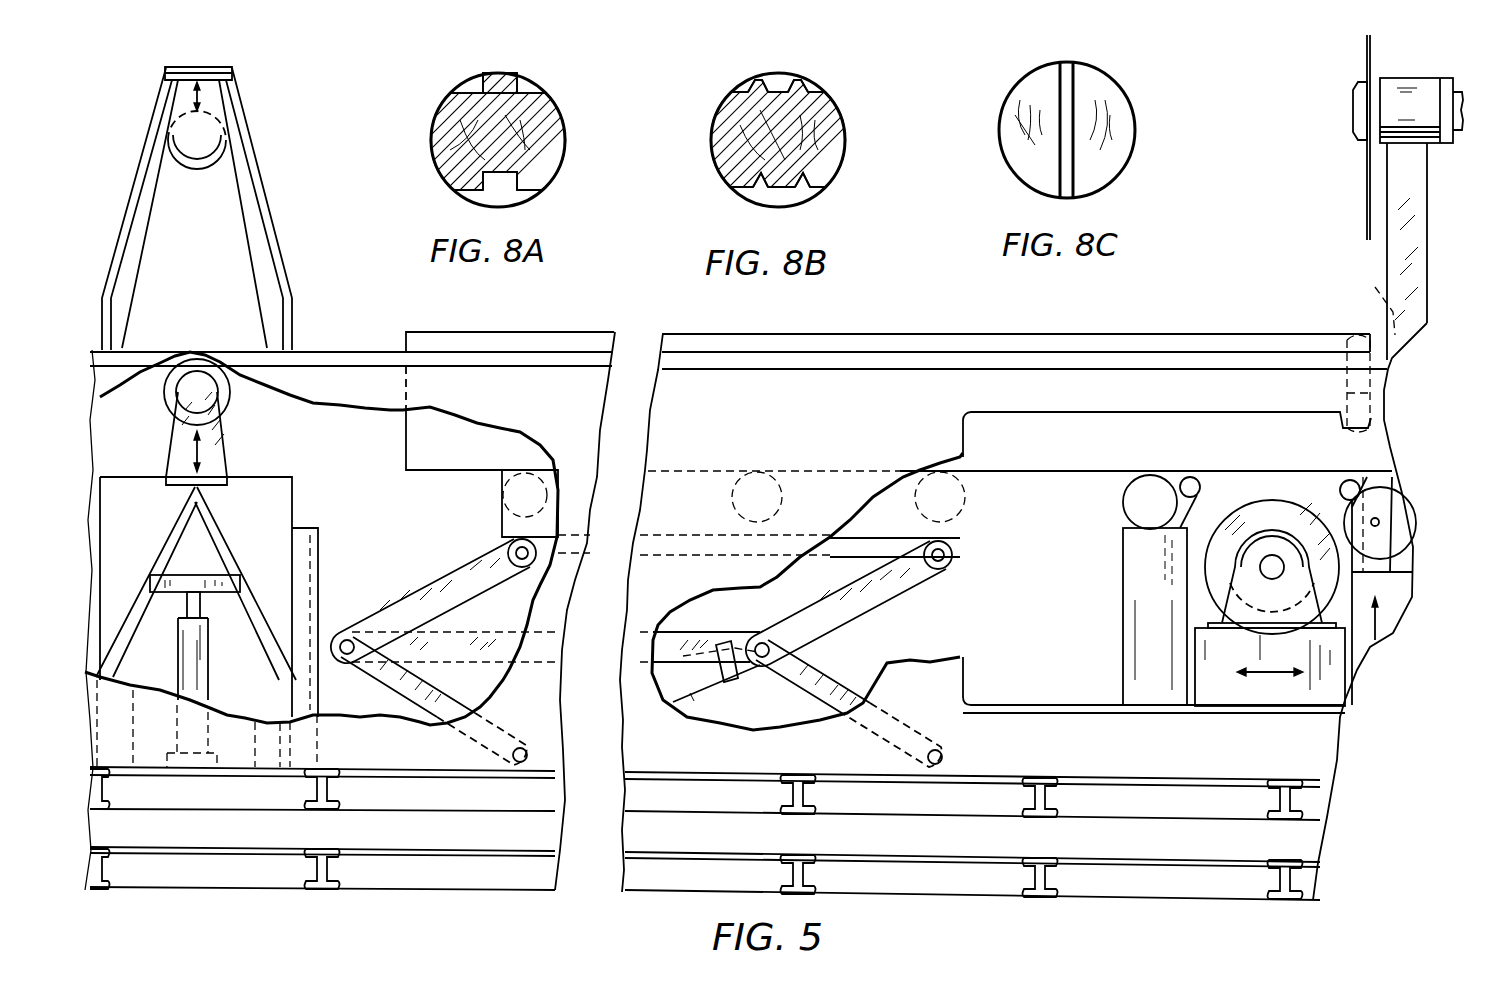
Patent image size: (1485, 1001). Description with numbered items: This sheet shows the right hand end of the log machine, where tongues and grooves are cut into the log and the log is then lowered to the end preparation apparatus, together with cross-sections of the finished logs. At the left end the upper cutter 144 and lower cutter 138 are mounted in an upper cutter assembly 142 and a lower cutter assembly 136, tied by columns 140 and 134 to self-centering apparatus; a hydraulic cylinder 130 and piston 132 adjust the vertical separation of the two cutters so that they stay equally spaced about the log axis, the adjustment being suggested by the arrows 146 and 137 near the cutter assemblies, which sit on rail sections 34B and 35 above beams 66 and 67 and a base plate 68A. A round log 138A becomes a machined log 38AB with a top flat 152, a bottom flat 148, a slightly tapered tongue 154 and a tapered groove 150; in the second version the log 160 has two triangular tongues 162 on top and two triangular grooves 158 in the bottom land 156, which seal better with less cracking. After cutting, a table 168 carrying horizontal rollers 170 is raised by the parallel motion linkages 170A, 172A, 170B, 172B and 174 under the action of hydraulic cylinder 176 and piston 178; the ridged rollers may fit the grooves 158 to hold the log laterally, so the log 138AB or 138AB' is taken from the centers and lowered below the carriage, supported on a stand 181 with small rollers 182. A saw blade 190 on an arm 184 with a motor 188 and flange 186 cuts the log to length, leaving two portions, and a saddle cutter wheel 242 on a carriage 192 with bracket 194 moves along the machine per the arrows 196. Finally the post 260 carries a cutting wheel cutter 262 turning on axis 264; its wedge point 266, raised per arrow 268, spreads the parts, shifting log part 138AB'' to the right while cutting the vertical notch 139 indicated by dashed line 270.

In FIG. 5, the rail section 34B is at (348, 343).
In FIG. 5, the rail section 35 is at (777, 421).
In FIG. 5, the log 38AB is at (585, 330).
In FIG. 5, the beam 66 is at (452, 848).
In FIG. 5, the beam 67 is at (982, 851).
In FIG. 5, the base plate 68A is at (667, 773).
In FIG. 5, the hydraulic cylinder 130 is at (198, 647).
In FIG. 5, the piston 132 is at (202, 607).
In FIG. 5, the column 134 is at (222, 538).
In FIG. 5, the lower cutter assembly 136 is at (228, 438).
In FIG. 5, the vertical motion arrow 137 is at (193, 447).
In FIG. 5, the lower cutter 138 is at (162, 397).
In FIG. 8C, the round log 138A is at (1002, 103).
In FIG. 8A, the machined log 138AB is at (544, 140).
In FIG. 5, the machined log 138AB' is at (1024, 344).
In FIG. 8B, the machined log 138AB' is at (824, 140).
In FIG. 5, the log part 138AB'' is at (1349, 305).
In FIG. 8C, the vertical notch 139 is at (1070, 108).
In FIG. 5, the column 140 is at (260, 195).
In FIG. 5, the upper cutter assembly 142 is at (227, 100).
In FIG. 5, the upper cutter 144 is at (197, 170).
In FIG. 5, the vertical motion arrow 146 is at (192, 91).
In FIG. 8A, the bottom flat 148 is at (543, 205).
In FIG. 8A, the groove 150 is at (425, 148).
In FIG. 8A, the top flat 152 is at (503, 122).
In FIG. 8A, the tongue 154 is at (483, 72).
In FIG. 8B, the bottom land 156 is at (783, 190).
In FIG. 8B, the grooves 158 is at (847, 157).
In FIG. 8B, the roller body 160 is at (818, 80).
In FIG. 8B, the top notch 162 is at (803, 53).
In FIG. 5, the table 168 is at (502, 540).
In FIG. 5, the horizontal rollers 170 is at (537, 477).
In FIG. 5, the linkage 170A is at (455, 570).
In FIG. 5, the linkage 170B is at (800, 612).
In FIG. 5, the linkage 172A is at (450, 707).
In FIG. 5, the linkage 172B is at (833, 667).
In FIG. 5, the linkage 174 is at (465, 630).
In FIG. 5, the hydraulic cylinder 176 is at (695, 690).
In FIG. 5, the piston 178 is at (747, 662).
In FIG. 5, the stand 181 is at (1122, 570).
In FIG. 5, the small roller 182 is at (1190, 477).
In FIG. 5, the arm 184 is at (1385, 247).
In FIG. 5, the flange 186 is at (1452, 128).
In FIG. 5, the motor 188 is at (1415, 78).
In FIG. 5, the saw blade 190 is at (1365, 66).
In FIG. 5, the carriage box 192 is at (1327, 675).
In FIG. 5, the wheel bracket 194 is at (1217, 613).
In FIG. 5, the arrows 196 is at (1278, 673).
In FIG. 5, the wheel 242 is at (1280, 487).
In FIG. 5, the post 260 is at (1413, 575).
In FIG. 5, the cutter 262 is at (1385, 455).
In FIG. 5, the axis 264 is at (1380, 520).
In FIG. 5, the wedge point 266 is at (1383, 432).
In FIG. 5, the arrow 268 is at (1377, 612).
In FIG. 5, the dashed line 270 is at (1360, 345).